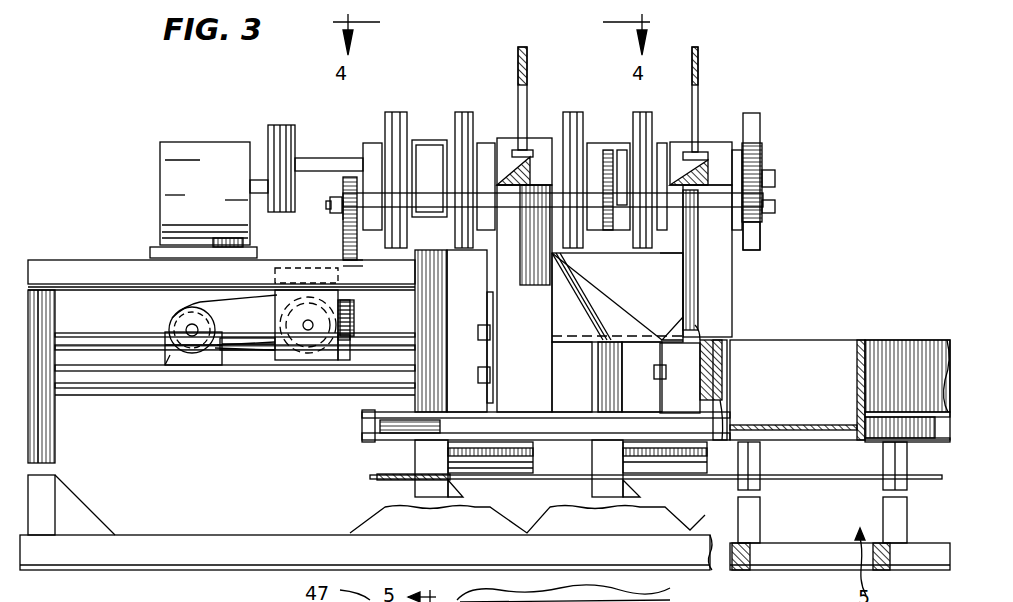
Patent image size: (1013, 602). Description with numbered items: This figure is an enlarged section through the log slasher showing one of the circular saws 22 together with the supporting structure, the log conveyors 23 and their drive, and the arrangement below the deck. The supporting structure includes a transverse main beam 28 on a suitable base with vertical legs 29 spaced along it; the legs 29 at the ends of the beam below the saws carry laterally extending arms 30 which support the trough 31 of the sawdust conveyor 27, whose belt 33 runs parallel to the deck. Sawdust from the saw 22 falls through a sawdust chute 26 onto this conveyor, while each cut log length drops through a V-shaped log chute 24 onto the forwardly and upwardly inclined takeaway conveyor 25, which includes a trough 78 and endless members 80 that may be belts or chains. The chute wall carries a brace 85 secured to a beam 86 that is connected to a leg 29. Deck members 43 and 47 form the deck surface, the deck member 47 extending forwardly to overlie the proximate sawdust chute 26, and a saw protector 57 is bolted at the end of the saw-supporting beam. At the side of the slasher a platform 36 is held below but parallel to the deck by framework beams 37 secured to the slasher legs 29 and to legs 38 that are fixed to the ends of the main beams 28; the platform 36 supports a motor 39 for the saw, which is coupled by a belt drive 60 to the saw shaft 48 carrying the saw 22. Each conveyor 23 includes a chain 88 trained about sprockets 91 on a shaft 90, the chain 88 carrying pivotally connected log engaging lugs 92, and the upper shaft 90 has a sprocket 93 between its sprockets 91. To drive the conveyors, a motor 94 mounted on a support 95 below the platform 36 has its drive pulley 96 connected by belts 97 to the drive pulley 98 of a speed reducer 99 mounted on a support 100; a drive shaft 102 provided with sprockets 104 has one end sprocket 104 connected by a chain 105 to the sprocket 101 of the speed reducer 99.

The circular saw 22 is at (700, 65).
The conveyor 23 is at (465, 100).
The log chute 24 is at (668, 285).
The takeaway conveyor 25 is at (908, 337).
The sawdust chute 26 is at (530, 367).
The sawdust conveyor 27 is at (372, 462).
The main beam 28 is at (222, 535).
The leg 29 is at (435, 520).
The arm 30 is at (508, 455).
The trough 31 is at (362, 430).
The belt 33 is at (382, 482).
The platform 36 is at (112, 260).
The beam 37 is at (112, 290).
The leg 38 is at (55, 440).
The motor 39 is at (190, 142).
The deck member 43 is at (430, 140).
The deck member 47 is at (540, 138).
The shaft 48 is at (315, 158).
The saw protector 57 is at (700, 112).
The belt drive 60 is at (285, 125).
The trough 78 is at (918, 363).
The endless member 80 is at (833, 424).
The brace 85 is at (575, 342).
The beam 86 is at (705, 333).
The chain 88 is at (762, 232).
The shaft 90 is at (620, 170).
The sprocket 91 is at (762, 162).
The log engaging lug 92 is at (762, 122).
The sprocket 93 is at (600, 158).
The motor 94 is at (188, 345).
The support 95 is at (165, 355).
The drive pulley 96 is at (170, 318).
The belt 97 is at (232, 298).
The drive pulley 98 is at (305, 348).
The speed reducer 99 is at (278, 347).
The support 100 is at (338, 363).
The sprocket 101 is at (354, 318).
The drive shaft 102 is at (335, 205).
The sprocket 104 is at (340, 162).
The chain 105 is at (343, 250).